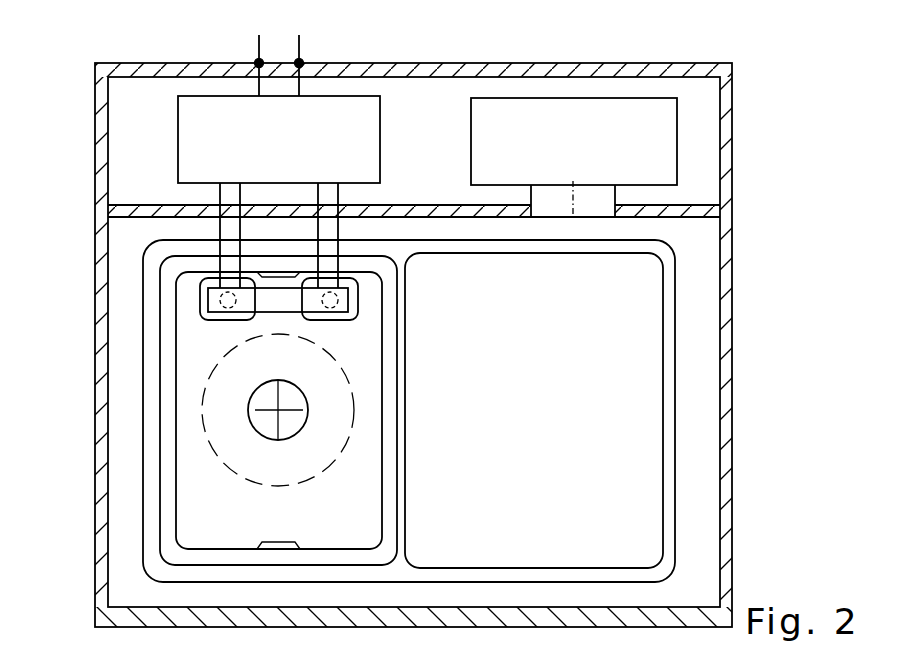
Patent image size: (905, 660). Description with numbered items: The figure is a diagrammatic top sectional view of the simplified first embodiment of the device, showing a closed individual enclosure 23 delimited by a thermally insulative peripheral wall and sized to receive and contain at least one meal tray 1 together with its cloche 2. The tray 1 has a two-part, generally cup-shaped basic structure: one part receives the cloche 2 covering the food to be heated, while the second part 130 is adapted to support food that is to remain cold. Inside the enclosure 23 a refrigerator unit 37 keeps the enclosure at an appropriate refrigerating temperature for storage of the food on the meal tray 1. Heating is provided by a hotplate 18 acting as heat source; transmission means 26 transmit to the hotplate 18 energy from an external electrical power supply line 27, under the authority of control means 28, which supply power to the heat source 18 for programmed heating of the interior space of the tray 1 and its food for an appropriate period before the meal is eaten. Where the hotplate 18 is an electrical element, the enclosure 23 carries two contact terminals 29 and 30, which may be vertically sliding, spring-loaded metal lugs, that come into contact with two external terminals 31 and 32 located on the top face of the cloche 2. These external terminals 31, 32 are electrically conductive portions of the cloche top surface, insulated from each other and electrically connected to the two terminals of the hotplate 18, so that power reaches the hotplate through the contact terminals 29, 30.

The meal tray 1 is at (673, 407).
The cloche 2 is at (193, 511).
The hotplate 18 is at (213, 450).
The enclosure 23 is at (143, 591).
The transmission means 26 is at (220, 195).
The electrical power supply line 27 is at (259, 47).
The control means 28 is at (183, 128).
The contact terminal 29 is at (222, 297).
The contact terminal 30 is at (330, 307).
The external terminal 31 is at (208, 310).
The external terminal 32 is at (307, 312).
The refrigerator unit 37 is at (673, 146).
The second part 130 is at (632, 523).